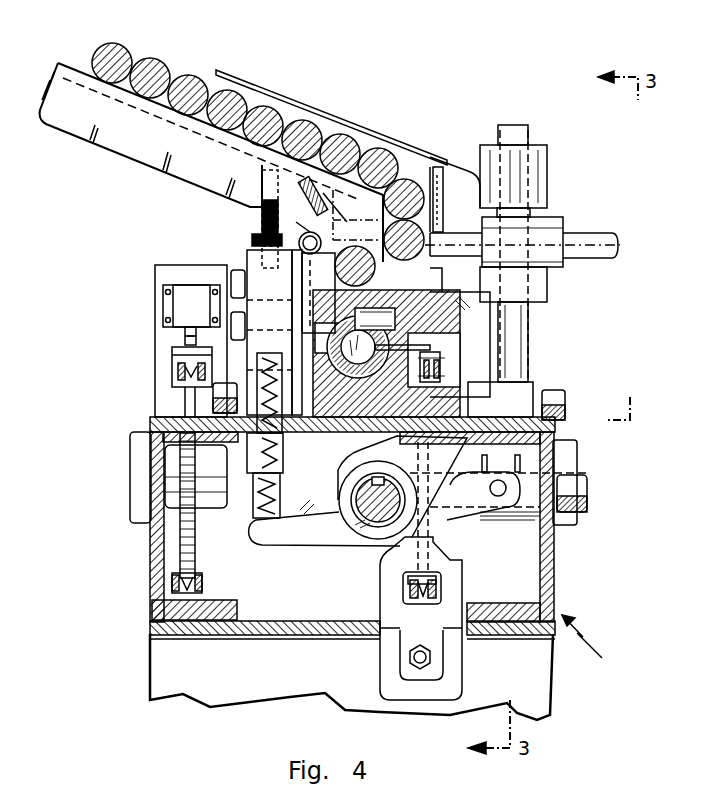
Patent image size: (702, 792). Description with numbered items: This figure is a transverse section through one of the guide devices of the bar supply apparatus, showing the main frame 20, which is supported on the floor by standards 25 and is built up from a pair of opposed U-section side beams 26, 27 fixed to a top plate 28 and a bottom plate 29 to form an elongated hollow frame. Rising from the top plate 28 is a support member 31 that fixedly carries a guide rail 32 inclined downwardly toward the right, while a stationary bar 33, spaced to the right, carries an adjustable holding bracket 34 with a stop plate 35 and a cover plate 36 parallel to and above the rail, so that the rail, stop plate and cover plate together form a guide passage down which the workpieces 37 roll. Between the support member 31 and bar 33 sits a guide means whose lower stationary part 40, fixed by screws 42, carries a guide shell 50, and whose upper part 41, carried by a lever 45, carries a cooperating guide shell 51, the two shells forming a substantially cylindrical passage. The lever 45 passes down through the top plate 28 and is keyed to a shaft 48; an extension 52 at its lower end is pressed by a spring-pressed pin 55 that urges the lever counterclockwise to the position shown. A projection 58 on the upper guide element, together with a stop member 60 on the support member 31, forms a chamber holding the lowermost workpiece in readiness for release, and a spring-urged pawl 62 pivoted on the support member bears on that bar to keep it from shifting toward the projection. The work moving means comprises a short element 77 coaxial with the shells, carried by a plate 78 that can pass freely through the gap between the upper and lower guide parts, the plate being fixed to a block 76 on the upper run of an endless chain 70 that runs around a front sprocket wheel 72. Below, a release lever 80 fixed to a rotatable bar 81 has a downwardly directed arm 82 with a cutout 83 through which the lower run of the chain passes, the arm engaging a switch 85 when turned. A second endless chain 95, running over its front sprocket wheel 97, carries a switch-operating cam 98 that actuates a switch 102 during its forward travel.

The main frame 20 is at (593, 648).
The standards 25 is at (160, 660).
The side beam 26 is at (160, 548).
The side beam 27 is at (552, 553).
The top plate 28 is at (155, 422).
The bottom plate 29 is at (298, 628).
The support member 31 is at (250, 235).
The guide rail 32 is at (138, 152).
The stationary bar 33 is at (517, 130).
The holding bracket 34 is at (555, 222).
The stop plate 35 is at (467, 230).
The cover plate 36 is at (293, 103).
The workpieces 37 is at (187, 83).
The lower stationary part of guide means 40 is at (299, 416).
The upper part of guide means 41 is at (430, 295).
The screws 42 is at (550, 397).
The lever 45 is at (485, 320).
The shaft 48 is at (360, 543).
The guide shell 50 is at (352, 417).
The guide shell 51 is at (432, 320).
The extension 52 is at (315, 540).
The spring-pressed pin 55 is at (283, 495).
The projection 58 is at (432, 273).
The stop member 60 is at (248, 258).
The pawl 62 is at (380, 167).
The endless chain 70 is at (443, 363).
The front sprocket wheel 72 is at (437, 582).
The block 76 is at (438, 352).
The element 77 is at (313, 332).
The plate 78 is at (432, 338).
The release lever 80 is at (456, 532).
The bar 81 is at (575, 480).
The arm 82 is at (385, 597).
The cutout 83 is at (443, 568).
The switch 85 is at (395, 662).
The second endless chain 95 is at (180, 375).
The front sprocket wheel 97 is at (192, 542).
The switch-operating cam 98 is at (175, 360).
The switch 102 is at (182, 306).